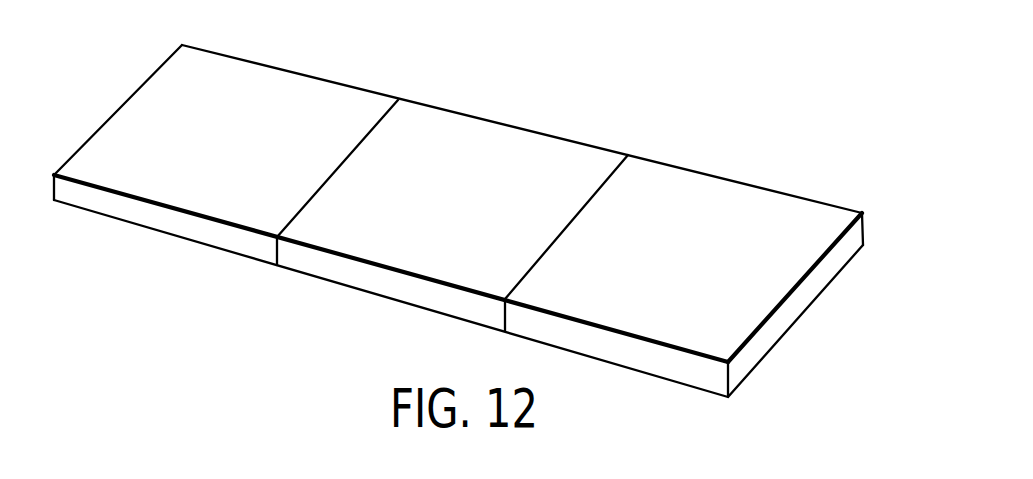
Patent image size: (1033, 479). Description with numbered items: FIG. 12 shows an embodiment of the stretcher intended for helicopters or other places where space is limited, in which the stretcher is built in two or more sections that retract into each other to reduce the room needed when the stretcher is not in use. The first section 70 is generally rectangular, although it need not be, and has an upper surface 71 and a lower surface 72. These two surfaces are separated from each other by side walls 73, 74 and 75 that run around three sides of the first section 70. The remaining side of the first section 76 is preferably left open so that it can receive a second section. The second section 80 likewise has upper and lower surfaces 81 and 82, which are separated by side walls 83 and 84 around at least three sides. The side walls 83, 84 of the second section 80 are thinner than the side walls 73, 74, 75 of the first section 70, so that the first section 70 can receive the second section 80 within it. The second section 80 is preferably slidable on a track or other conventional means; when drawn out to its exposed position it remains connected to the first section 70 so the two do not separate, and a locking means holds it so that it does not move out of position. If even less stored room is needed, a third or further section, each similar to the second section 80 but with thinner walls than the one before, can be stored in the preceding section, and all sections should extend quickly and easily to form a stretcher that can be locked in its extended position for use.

The first section 70 is at (665, 164).
The upper surface 71 is at (750, 297).
The lower surface 72 is at (663, 382).
The side wall 73 is at (565, 335).
The side wall 74 is at (762, 360).
The side wall 75 is at (884, 196).
The remaining side of the first section 76 is at (542, 252).
The second section 80 is at (378, 297).
The upper surface 81 is at (457, 317).
The lower surface 82 is at (475, 152).
The side wall 83 is at (300, 253).
The side wall 84 is at (421, 102).